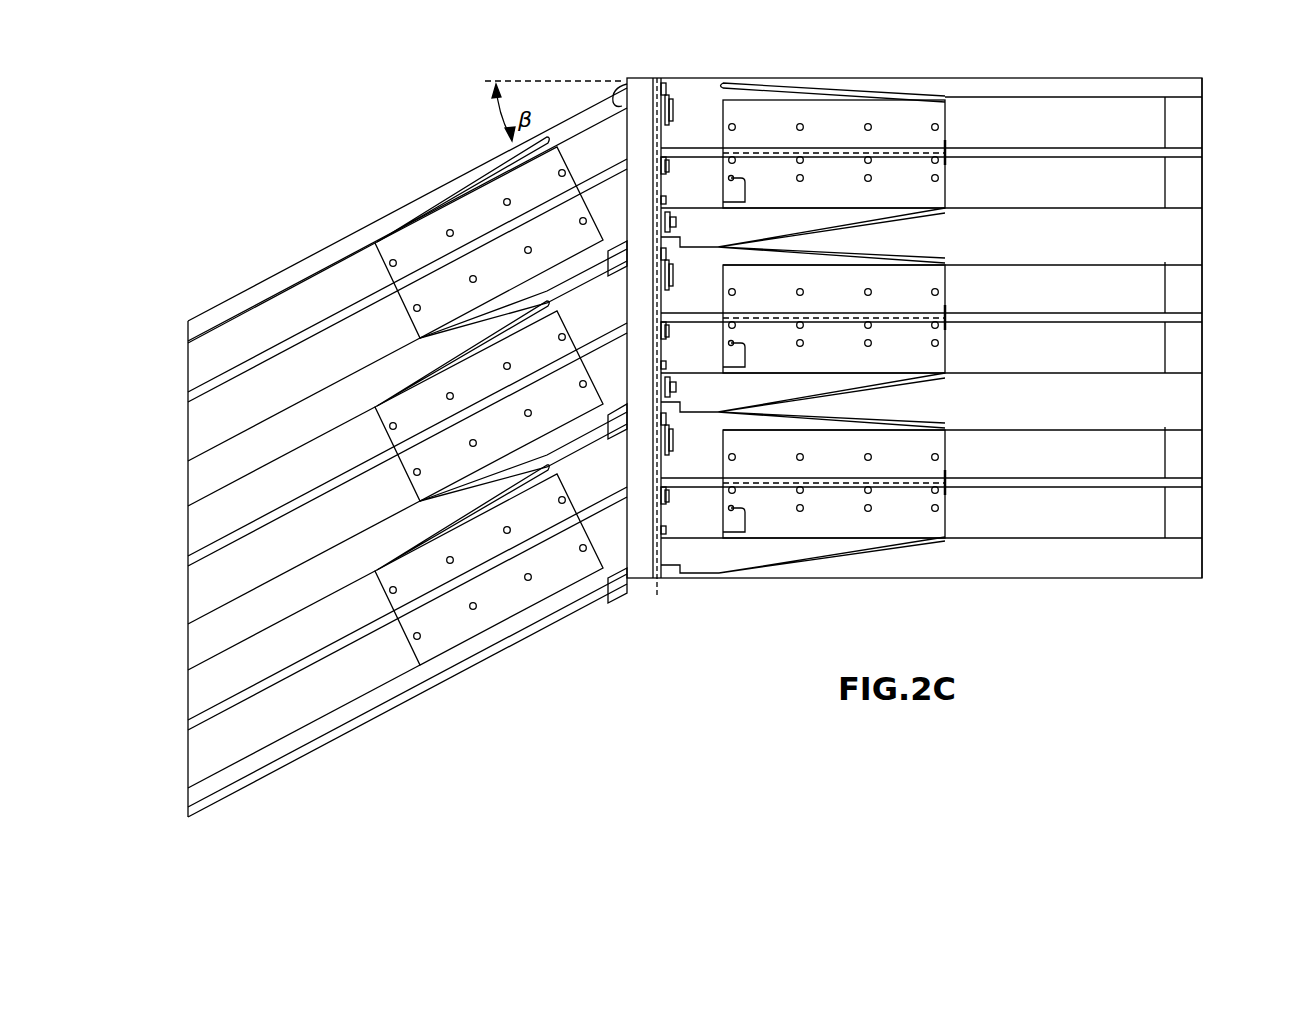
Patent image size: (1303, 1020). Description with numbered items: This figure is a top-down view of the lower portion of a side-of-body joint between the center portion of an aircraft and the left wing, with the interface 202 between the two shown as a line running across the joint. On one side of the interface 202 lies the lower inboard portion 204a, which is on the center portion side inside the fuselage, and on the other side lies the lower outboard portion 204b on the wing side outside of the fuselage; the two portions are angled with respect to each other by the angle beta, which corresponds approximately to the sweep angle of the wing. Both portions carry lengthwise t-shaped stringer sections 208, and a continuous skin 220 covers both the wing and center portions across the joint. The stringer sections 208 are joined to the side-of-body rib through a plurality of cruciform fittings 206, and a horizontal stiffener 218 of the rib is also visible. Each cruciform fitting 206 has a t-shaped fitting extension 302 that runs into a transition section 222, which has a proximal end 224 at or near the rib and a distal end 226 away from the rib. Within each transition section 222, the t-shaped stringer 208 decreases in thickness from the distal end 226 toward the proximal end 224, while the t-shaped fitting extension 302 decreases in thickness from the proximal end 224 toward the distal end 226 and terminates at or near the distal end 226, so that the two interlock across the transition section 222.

The interface 202 is at (657, 586).
The lower inboard portion 204a is at (1030, 643).
The lower outboard portion 204b is at (470, 690).
The cruciform fitting 206 is at (707, 228).
The t-shaped stringer section 208 is at (1133, 208).
The horizontal stiffener 218 is at (618, 93).
The skin 220 is at (1168, 578).
The transition section 222 is at (818, 155).
The proximal end 224 is at (722, 156).
The distal end 226 is at (943, 154).
The t-shaped fitting extension 302 is at (763, 220).